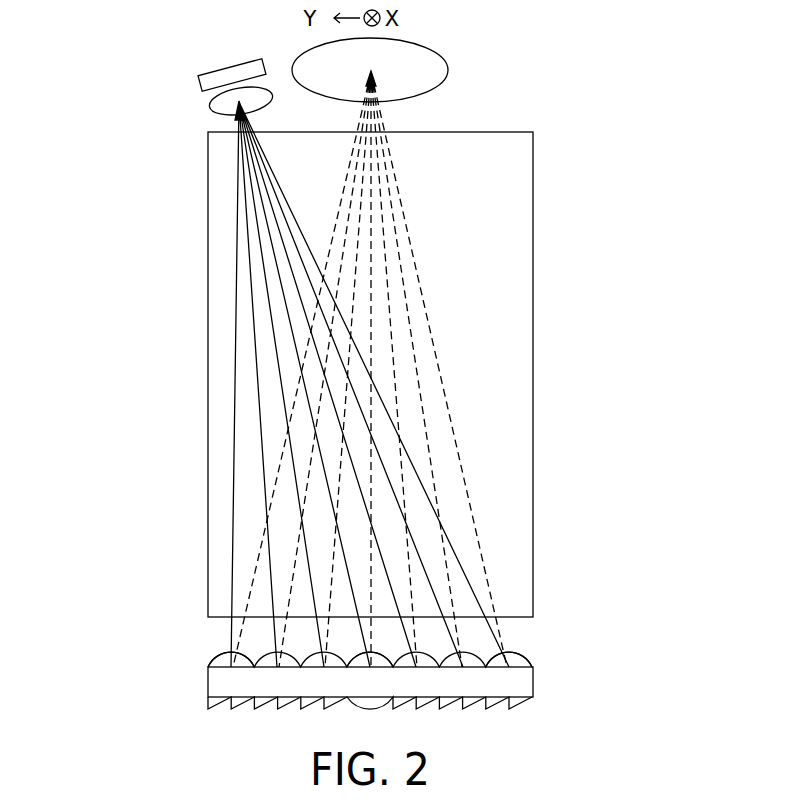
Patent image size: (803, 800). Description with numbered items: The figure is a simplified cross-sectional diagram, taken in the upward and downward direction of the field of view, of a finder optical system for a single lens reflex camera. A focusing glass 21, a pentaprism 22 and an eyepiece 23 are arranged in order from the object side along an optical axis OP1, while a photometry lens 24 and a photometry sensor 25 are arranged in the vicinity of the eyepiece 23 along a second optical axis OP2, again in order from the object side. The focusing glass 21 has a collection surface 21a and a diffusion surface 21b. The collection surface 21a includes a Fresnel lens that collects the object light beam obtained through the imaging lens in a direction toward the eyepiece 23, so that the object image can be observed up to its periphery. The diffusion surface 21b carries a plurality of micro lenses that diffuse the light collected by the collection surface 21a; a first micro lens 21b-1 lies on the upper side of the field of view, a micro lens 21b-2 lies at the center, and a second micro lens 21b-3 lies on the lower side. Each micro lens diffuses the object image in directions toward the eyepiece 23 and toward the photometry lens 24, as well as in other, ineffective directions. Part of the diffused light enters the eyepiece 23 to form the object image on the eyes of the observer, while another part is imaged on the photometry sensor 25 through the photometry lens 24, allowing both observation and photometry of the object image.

The focusing glass 21 is at (351, 677).
The collection surface 21a is at (214, 724).
The diffusion surface 21b is at (204, 640).
The micro lens 21b-1 is at (213, 663).
The micro lens 21b-2 is at (377, 652).
The micro lens 21b-3 is at (507, 662).
The pentaprism 22 is at (208, 375).
The eyepiece 23 is at (450, 83).
The photometry lens 24 is at (212, 113).
The photometry sensor 25 is at (210, 66).
The optical axis OP1 is at (446, 382).
The optical axis OP2 is at (237, 232).